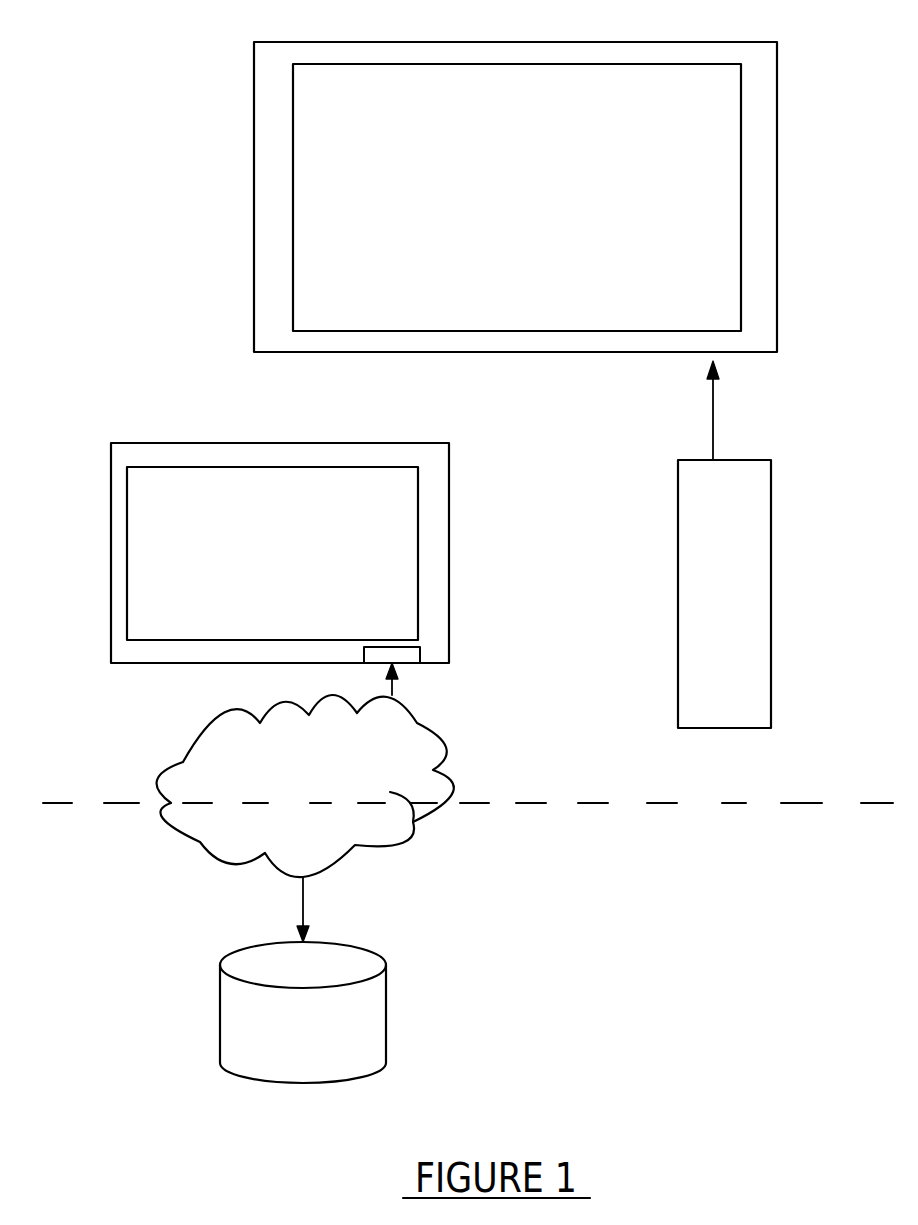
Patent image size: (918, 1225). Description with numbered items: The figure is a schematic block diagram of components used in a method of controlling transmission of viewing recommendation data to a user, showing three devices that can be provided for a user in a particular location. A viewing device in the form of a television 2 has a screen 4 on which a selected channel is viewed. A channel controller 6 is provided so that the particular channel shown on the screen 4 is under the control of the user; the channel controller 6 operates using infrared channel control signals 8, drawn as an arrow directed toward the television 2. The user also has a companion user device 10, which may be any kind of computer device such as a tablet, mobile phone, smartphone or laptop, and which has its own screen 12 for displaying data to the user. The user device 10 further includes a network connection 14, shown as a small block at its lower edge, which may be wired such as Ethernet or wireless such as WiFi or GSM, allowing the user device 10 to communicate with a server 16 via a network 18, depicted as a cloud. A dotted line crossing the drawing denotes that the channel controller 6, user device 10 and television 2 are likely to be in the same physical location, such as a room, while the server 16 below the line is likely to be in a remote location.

The television 2 is at (767, 271).
The screen 4 is at (711, 77).
The channel controller 6 is at (760, 601).
The infrared channel control signals 8 is at (721, 400).
The user device 10 is at (453, 500).
The screen 12 is at (168, 483).
The network connection 14 is at (415, 660).
The server 16 is at (231, 1043).
The network 18 is at (168, 776).